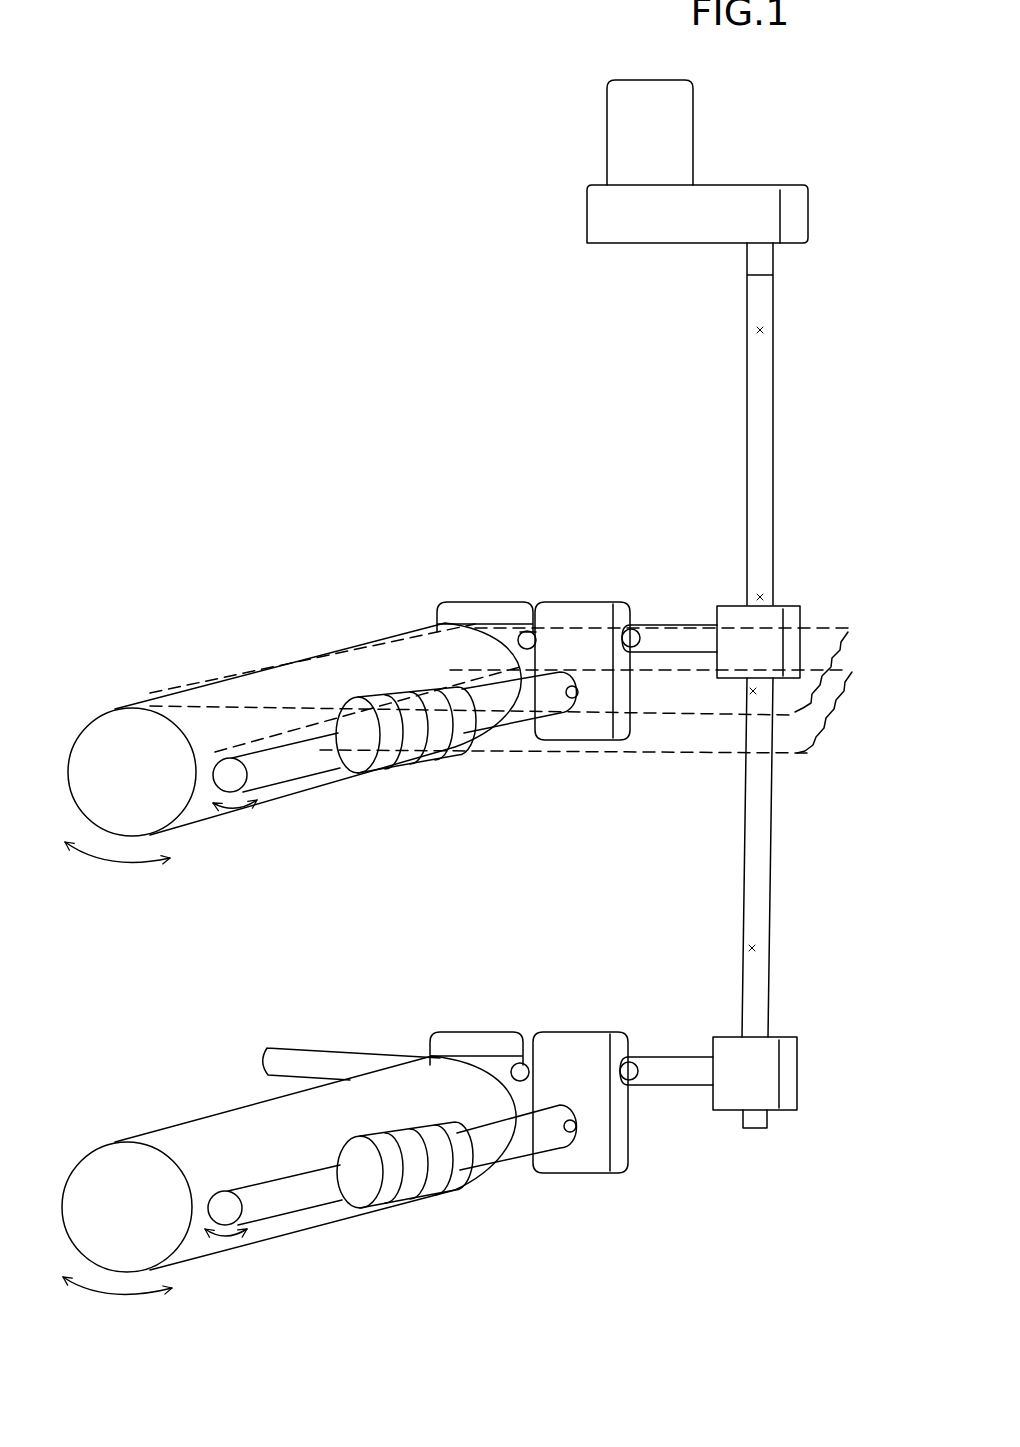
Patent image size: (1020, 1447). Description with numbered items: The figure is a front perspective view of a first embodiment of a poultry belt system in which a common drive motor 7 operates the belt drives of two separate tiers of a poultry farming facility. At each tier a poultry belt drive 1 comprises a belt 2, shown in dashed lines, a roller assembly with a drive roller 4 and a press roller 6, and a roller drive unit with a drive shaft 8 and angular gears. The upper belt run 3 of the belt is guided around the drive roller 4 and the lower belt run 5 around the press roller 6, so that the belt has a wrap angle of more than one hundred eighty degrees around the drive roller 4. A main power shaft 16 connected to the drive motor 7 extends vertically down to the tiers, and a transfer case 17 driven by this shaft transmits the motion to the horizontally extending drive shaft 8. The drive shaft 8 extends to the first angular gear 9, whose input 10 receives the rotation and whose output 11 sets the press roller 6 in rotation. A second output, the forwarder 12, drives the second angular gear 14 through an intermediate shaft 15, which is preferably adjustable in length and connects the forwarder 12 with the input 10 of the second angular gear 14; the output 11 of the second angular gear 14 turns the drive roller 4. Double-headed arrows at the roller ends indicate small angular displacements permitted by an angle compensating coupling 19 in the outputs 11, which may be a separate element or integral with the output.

The poultry belt drive 1 is at (385, 268).
The belt 2 is at (175, 685).
The upper belt run 3 is at (332, 690).
The drive roller 4 is at (137, 800).
The lower belt run 5 is at (665, 758).
The press roller 6 is at (372, 770).
The drive motor 7 is at (630, 165).
The drive shaft 8 is at (698, 637).
The angular gear 9 is at (580, 605).
The input 10 is at (500, 610).
The output 11 is at (585, 728).
The forwarder 12 is at (552, 712).
The second angular gear 14 is at (445, 605).
The intermediate shaft 15 is at (520, 1100).
The main power shaft 16 is at (760, 497).
The transfer case 17 is at (768, 612).
The angle compensating coupling 19 is at (465, 610).